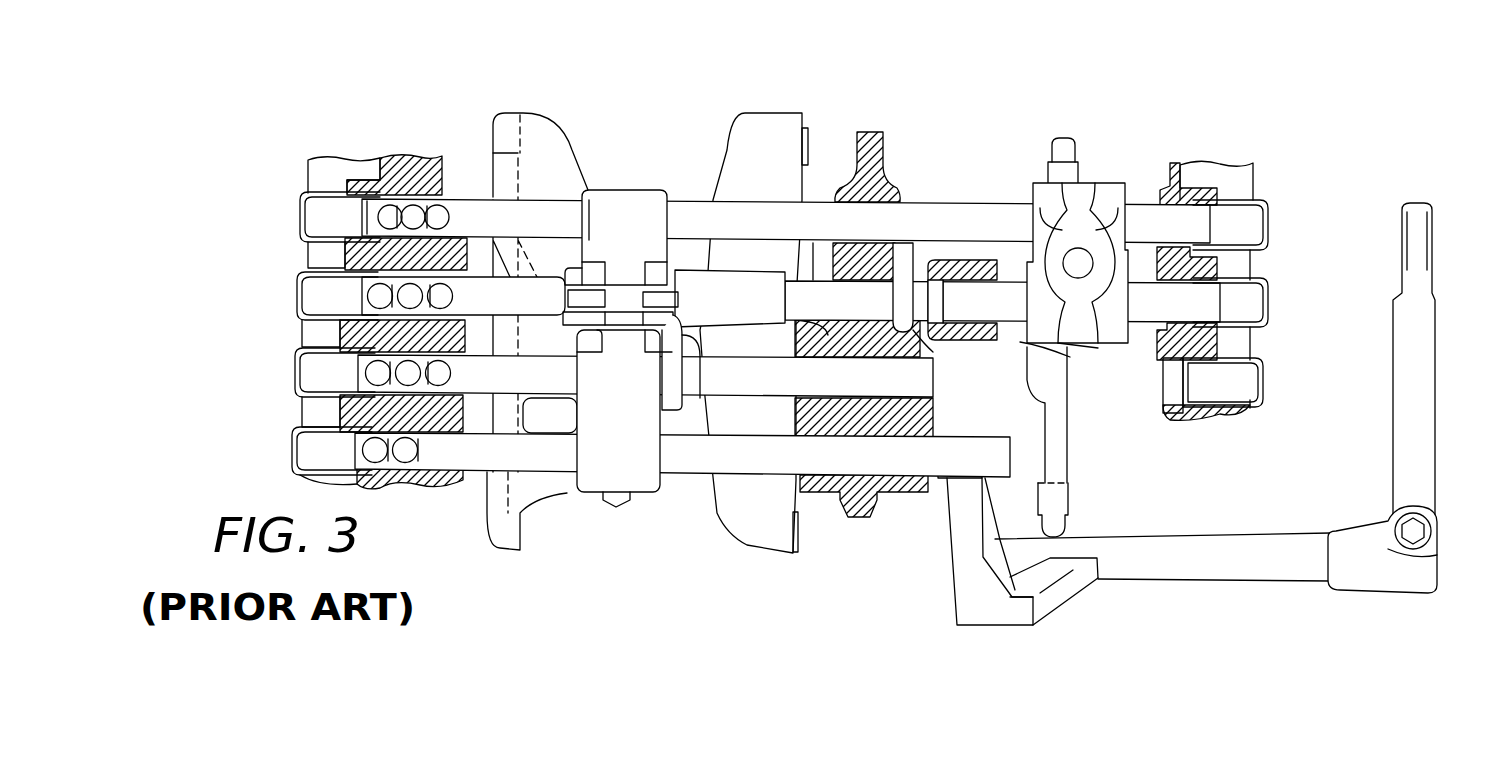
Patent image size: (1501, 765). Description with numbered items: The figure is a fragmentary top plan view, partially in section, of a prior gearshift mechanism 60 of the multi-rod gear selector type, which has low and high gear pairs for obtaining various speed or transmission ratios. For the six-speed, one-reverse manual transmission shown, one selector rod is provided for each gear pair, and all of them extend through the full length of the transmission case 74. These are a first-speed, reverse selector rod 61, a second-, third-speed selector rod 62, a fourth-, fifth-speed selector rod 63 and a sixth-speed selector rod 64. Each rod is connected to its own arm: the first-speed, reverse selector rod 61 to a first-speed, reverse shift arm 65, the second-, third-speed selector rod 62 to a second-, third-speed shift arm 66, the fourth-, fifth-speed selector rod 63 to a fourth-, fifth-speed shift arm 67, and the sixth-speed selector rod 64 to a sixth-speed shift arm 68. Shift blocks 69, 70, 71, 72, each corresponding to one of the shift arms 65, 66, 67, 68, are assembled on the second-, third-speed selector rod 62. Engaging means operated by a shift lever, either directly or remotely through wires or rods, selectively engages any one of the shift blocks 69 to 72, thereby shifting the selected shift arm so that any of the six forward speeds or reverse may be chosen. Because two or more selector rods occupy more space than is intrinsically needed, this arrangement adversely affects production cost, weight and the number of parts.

The gearshift mechanism 60 is at (910, 124).
The first-speed, reverse selector rod 61 is at (955, 215).
The second-, third-speed selector rod 62 is at (817, 292).
The fourth-, fifth-speed selector rod 63 is at (816, 385).
The sixth-speed selector rod 64 is at (900, 465).
The first-speed, reverse shift arm 65 is at (1068, 150).
The second-, third-speed shift arm 66 is at (755, 135).
The fourth-, fifth-speed shift arm 67 is at (548, 148).
The sixth-speed shift arm 68 is at (1422, 340).
The shift block 69 is at (621, 272).
The shift block 70 is at (680, 293).
The shift block 71 is at (693, 345).
The shift block 72 is at (618, 352).
The transmission case 74 is at (403, 170).